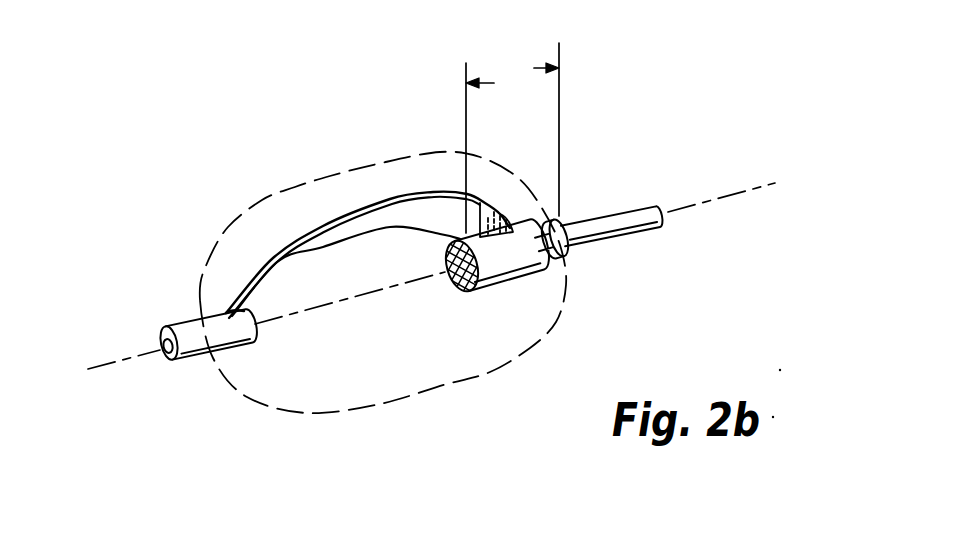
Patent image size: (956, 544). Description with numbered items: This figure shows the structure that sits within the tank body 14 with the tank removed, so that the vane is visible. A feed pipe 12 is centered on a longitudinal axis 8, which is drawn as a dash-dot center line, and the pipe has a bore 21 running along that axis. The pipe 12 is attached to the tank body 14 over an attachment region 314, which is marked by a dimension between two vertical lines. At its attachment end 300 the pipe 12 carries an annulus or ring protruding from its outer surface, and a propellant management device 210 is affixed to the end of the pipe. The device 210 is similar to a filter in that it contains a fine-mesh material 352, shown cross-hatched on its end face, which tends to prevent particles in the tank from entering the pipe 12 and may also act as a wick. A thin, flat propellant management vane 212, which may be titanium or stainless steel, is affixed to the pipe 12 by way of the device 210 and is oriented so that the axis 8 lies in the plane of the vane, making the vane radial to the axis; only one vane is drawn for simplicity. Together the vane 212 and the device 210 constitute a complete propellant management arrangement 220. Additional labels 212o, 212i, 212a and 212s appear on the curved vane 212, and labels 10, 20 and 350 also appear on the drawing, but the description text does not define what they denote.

The longitudinal axis 8 is at (737, 186).
The first cylindrical ferrule 10 is at (207, 360).
The pipe 12 is at (642, 229).
The tank body 14 is at (480, 376).
The region 20 is at (383, 309).
The bore 21 is at (163, 360).
The propellant management device 210 is at (521, 272).
The vane 212 is at (343, 225).
The outer surface of band 212o is at (340, 216).
The inner surface of band 212i is at (345, 240).
The end portion of band 212a is at (480, 222).
The stem portion of band 212s is at (192, 287).
The propellant management arrangement 220 is at (421, 363).
The attachment end 300 is at (530, 260).
The attachment region 314 is at (512, 138).
The ring washer 350 is at (562, 223).
The fine-mesh material 352 is at (458, 293).